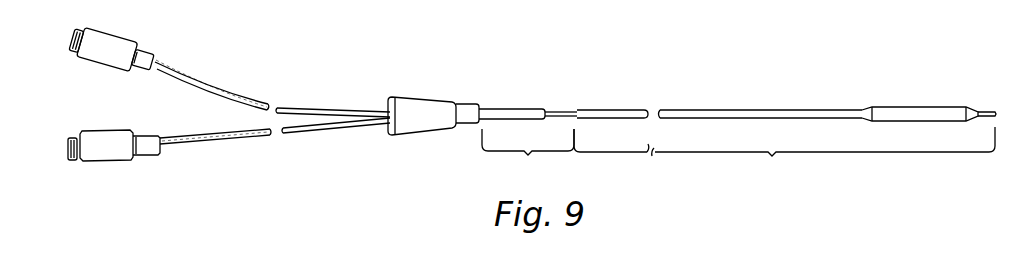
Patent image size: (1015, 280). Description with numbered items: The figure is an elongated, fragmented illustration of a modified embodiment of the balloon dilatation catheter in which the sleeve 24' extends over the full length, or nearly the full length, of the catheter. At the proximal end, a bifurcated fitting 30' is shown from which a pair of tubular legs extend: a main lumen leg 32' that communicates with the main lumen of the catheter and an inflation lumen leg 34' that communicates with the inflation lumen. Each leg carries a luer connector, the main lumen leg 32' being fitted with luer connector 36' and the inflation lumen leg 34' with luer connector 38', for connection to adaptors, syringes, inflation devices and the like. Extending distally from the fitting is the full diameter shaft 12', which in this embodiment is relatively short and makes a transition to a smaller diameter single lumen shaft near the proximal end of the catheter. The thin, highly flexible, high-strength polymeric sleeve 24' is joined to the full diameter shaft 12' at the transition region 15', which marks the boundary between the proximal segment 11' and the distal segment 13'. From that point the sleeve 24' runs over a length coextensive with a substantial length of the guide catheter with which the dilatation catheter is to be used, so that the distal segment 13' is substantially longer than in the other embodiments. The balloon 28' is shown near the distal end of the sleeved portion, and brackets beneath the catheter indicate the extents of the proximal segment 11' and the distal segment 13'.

The luer connector 38' is at (112, 61).
The inflation lumen leg 34' is at (212, 85).
The luer connector 36' is at (114, 161).
The main lumen leg 32' is at (215, 147).
The bifurcated fitting 30' is at (377, 101).
The full diameter shaft 12' is at (525, 85).
The transition region 15' is at (573, 84).
The proximal segment 11' is at (528, 153).
The sleeve 24' is at (719, 88).
The balloon 28' is at (929, 91).
The distal segment 13' is at (784, 152).